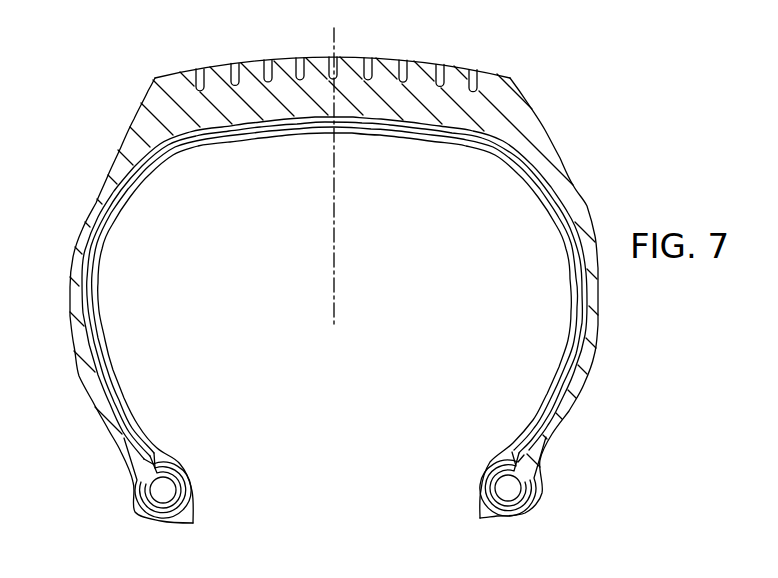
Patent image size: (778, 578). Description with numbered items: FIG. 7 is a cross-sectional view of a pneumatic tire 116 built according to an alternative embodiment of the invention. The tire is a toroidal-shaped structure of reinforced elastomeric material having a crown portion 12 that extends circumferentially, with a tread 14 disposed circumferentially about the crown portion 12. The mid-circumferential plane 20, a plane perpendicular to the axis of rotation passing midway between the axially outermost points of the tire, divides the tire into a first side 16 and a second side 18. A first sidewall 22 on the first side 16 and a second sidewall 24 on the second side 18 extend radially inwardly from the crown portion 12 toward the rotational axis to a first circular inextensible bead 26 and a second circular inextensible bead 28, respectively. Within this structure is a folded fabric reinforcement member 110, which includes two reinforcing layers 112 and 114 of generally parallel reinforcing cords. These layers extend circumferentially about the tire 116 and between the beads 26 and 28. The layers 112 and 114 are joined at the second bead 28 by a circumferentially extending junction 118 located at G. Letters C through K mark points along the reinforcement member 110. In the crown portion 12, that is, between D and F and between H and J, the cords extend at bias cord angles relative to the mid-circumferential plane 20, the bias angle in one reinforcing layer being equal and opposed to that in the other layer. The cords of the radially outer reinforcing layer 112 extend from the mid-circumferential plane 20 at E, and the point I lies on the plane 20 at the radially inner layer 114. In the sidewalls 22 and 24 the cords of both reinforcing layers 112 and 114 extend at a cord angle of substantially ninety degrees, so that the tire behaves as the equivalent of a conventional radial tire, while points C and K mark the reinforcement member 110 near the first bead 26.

The tire 116 is at (582, 74).
The folded fabric reinforcement member 110 is at (262, 108).
The crown portion 12 is at (417, 82).
The tread 14 is at (370, 62).
The reinforcing layer 112 is at (538, 170).
The reinforcing layer 114 is at (538, 196).
The mid-circumferential plane 20 is at (336, 243).
The second sidewall 24 is at (70, 284).
The second side 18 is at (66, 310).
The first sidewall 22 is at (598, 312).
The first side 16 is at (600, 350).
The first bead 26 is at (514, 492).
The second bead 28 is at (158, 492).
The junction 118 is at (124, 432).
The point E is at (334, 97).
The point I is at (334, 133).
The point F is at (178, 131).
The point H is at (178, 156).
The point D is at (487, 132).
The point J is at (487, 155).
The point C is at (547, 428).
The point K is at (552, 430).
The point G is at (118, 433).